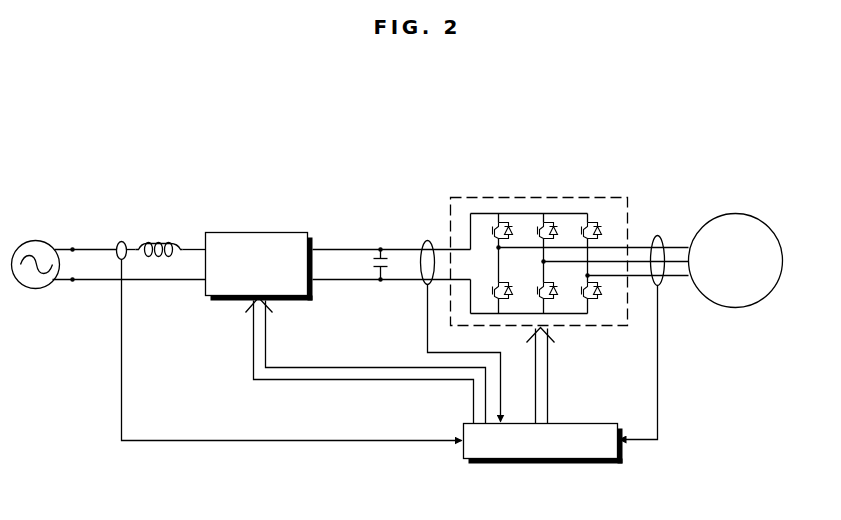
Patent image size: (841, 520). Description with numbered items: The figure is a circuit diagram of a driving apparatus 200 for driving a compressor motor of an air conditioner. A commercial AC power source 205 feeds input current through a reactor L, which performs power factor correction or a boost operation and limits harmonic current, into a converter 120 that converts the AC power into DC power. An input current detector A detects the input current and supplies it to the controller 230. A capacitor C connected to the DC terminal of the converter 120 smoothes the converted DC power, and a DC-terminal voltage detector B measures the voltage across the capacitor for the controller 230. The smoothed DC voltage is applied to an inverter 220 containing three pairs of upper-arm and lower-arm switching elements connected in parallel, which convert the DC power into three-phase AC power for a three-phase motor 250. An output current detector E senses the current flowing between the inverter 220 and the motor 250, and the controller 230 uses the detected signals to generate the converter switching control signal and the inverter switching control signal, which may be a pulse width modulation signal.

The driving apparatus 200 is at (110, 131).
The commercial AC power source 205 is at (42, 241).
The converter 120 is at (291, 232).
The inverter 220 is at (597, 197).
The three-phase motor 250 is at (766, 222).
The controller 230 is at (598, 422).